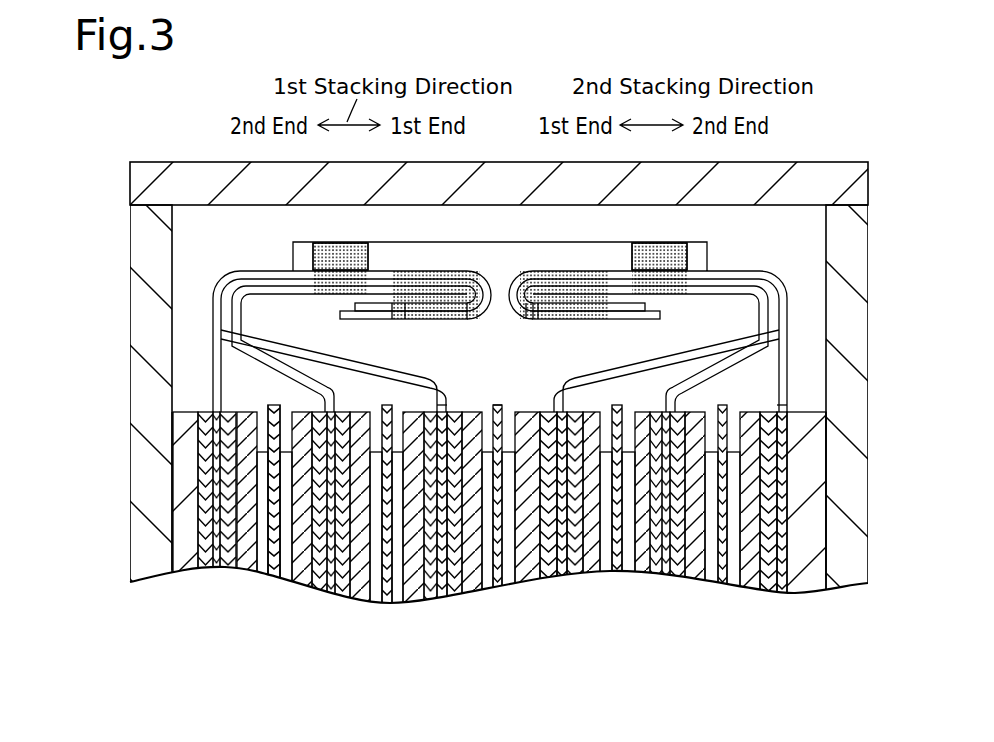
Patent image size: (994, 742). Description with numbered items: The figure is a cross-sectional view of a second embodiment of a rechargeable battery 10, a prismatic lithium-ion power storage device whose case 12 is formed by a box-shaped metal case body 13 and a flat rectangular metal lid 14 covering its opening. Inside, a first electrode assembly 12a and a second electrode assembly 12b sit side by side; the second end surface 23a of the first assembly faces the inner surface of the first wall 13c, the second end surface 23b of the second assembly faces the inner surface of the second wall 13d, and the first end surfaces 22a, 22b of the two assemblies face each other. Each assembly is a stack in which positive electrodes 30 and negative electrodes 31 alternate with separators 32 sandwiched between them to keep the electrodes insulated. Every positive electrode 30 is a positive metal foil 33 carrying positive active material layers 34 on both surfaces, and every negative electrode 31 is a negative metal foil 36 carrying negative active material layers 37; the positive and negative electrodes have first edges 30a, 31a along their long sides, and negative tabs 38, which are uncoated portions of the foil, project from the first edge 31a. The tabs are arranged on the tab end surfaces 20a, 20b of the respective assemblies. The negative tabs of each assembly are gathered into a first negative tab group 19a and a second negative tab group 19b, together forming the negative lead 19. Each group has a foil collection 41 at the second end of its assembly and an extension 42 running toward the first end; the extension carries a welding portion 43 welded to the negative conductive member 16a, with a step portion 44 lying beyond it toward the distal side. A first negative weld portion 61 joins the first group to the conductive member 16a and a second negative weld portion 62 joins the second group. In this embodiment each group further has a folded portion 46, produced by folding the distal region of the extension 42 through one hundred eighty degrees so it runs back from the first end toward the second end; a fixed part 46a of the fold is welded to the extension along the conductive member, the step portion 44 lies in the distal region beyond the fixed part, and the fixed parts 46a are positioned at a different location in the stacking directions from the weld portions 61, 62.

The rechargeable battery 10 is at (94, 150).
The case 12 is at (66, 188).
The first electrode assembly 12a is at (196, 468).
The second electrode assembly 12b is at (802, 457).
The case body 13 is at (130, 238).
The first wall 13c is at (132, 318).
The second wall 13d is at (868, 268).
The lid 14 is at (130, 182).
The negative conductive member 16a is at (500, 242).
The lead 19 is at (498, 310).
The first negative tab group 19a is at (235, 268).
The second negative tab group 19b is at (765, 250).
The tab end surface 20a is at (324, 398).
The tab end surface 20b is at (676, 398).
The first end surface 22a is at (482, 410).
The first end surface 22b is at (462, 596).
The second end surface 23a is at (196, 494).
The second end surface 23b is at (806, 508).
The positive electrode 30 is at (340, 640).
The first edge 30a is at (507, 450).
The negative electrode 31 is at (724, 640).
The first edge 31a is at (208, 404).
The separator 32 is at (243, 576).
The positive metal foil 33 is at (274, 582).
The positive active material layer 34 is at (262, 580).
The negative metal foil 36 is at (666, 582).
The negative active material layer 37 is at (652, 582).
The negative tab 38 is at (405, 320).
The foil collection 41 is at (216, 310).
The extension 42 is at (380, 270).
The welding portion 43 is at (362, 306).
The step portion 44 is at (336, 382).
The folded portion 46 is at (418, 322).
The fixed part 46a is at (420, 312).
The first negative weld portion 61 is at (318, 257).
The second negative weld portion 62 is at (682, 256).